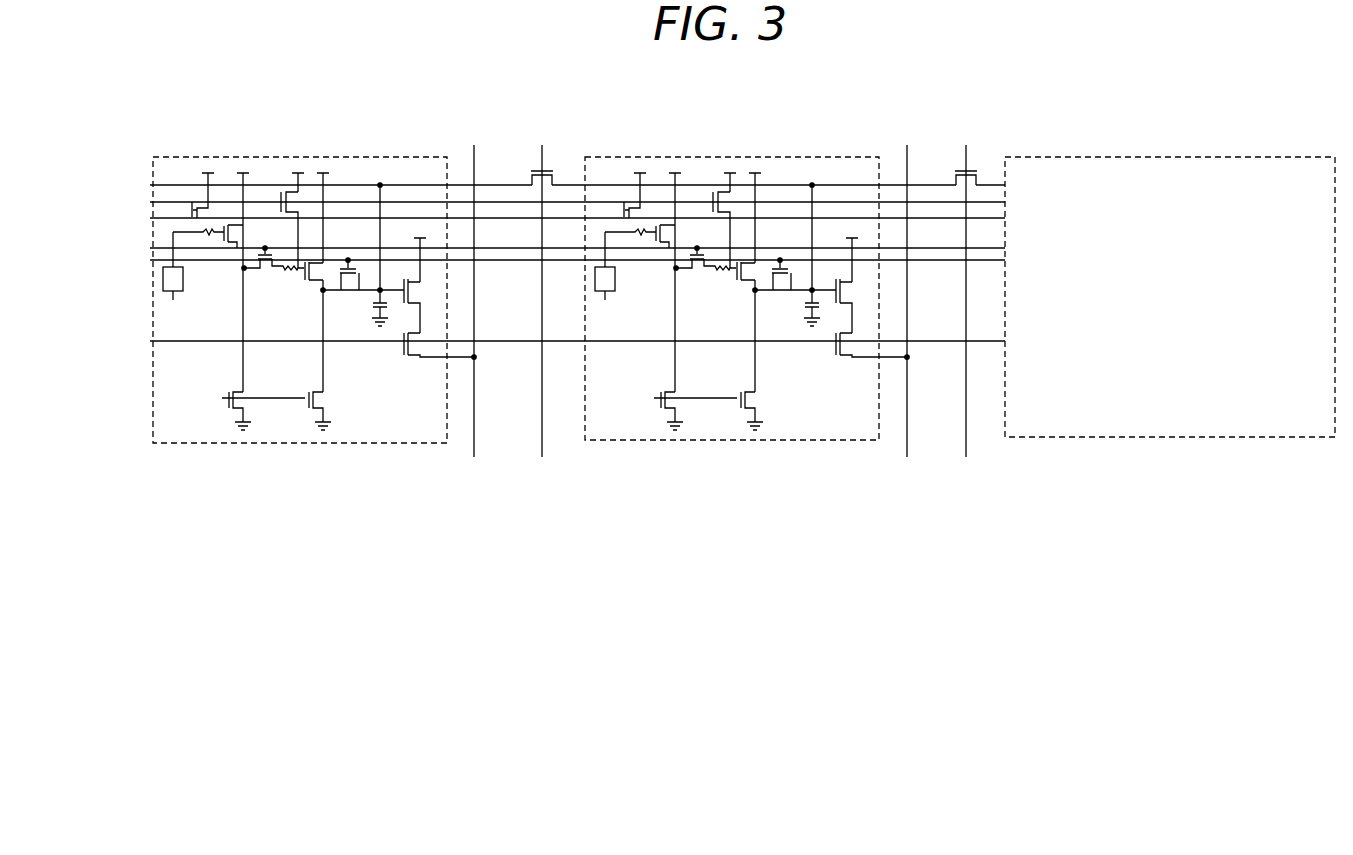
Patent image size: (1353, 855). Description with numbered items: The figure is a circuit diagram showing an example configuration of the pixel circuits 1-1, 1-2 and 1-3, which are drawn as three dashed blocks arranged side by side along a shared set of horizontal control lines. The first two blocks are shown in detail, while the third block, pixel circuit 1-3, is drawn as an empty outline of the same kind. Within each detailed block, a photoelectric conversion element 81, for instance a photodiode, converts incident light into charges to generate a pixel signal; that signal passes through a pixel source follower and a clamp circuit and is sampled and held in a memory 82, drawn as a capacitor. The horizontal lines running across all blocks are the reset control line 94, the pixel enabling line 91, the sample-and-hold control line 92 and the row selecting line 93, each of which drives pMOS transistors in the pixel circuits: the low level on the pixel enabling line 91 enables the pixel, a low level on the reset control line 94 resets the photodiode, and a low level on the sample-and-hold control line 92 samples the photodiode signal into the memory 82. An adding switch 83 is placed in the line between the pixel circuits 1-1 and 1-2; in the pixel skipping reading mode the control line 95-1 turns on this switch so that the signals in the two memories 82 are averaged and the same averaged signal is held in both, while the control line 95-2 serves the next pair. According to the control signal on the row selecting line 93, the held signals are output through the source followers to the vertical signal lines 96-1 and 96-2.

The pixel circuit 1-1 is at (303, 157).
The pixel circuit 1-2 is at (747, 276).
The pixel circuit 1-3 is at (1168, 157).
The photoelectric conversion element 81 is at (185, 280).
The memory 82 is at (376, 305).
The adding switch 83 is at (538, 170).
The pixel enabling line 91 is at (152, 248).
The sample-and-hold control line 92 is at (152, 260).
The row selecting line 93 is at (152, 341).
The reset control line 94 is at (152, 218).
The control line 95-1 is at (542, 457).
The control line 95-2 is at (966, 457).
The vertical signal line 96-1 is at (474, 457).
The vertical signal line 96-2 is at (907, 457).